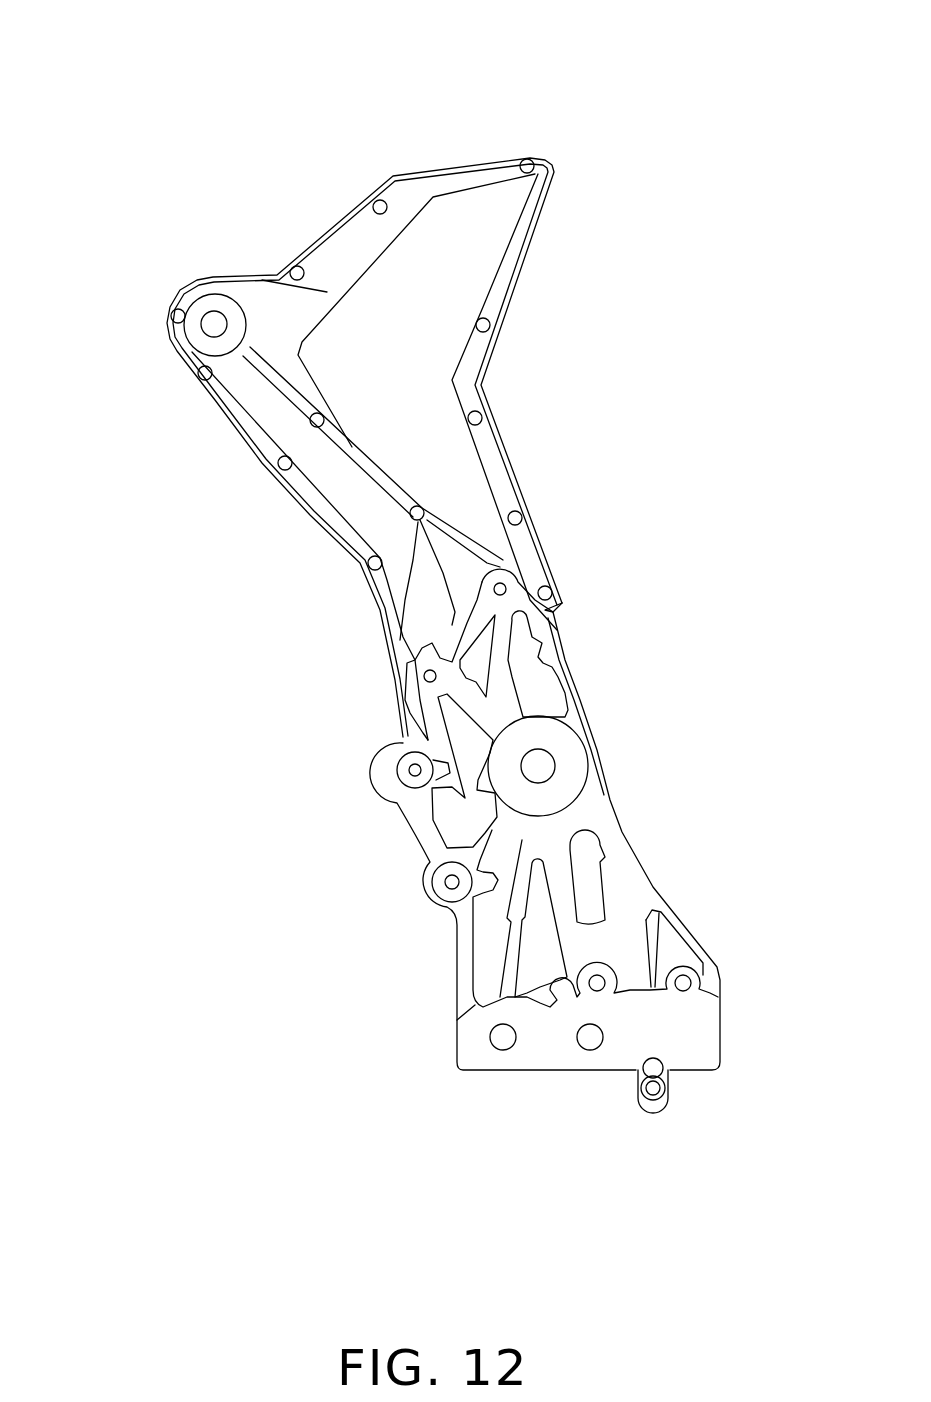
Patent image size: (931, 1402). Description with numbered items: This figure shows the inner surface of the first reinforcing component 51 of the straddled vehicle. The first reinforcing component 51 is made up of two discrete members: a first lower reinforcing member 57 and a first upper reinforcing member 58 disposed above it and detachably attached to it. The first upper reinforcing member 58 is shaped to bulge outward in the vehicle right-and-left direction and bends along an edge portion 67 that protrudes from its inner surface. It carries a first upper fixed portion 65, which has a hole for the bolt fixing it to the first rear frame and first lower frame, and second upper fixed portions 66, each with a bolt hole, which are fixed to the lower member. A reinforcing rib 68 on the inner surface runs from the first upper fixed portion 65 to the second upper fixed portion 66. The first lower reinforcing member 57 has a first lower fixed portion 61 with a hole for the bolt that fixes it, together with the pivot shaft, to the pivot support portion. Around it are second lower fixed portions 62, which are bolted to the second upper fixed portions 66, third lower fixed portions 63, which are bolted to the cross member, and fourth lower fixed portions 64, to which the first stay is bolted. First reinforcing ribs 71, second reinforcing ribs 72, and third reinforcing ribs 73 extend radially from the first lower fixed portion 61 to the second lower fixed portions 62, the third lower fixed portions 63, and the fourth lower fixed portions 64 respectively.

The first reinforcing component 51 is at (220, 104).
The first lower reinforcing member 57 is at (455, 972).
The first upper reinforcing member 58 is at (420, 363).
The first lower fixed portion 61 is at (570, 765).
The second lower fixed portions 62 is at (480, 582).
The third lower fixed portions 63 is at (533, 1040).
The fourth lower fixed portions 64 is at (442, 878).
The first upper fixed portion 65 is at (204, 310).
The second upper fixed portions 66 is at (523, 577).
The edge portion 67 is at (537, 243).
The reinforcing rib 68 is at (350, 447).
The first reinforcing ribs 71 is at (487, 700).
The second reinforcing ribs 72 is at (530, 903).
The third reinforcing ribs 73 is at (495, 780).